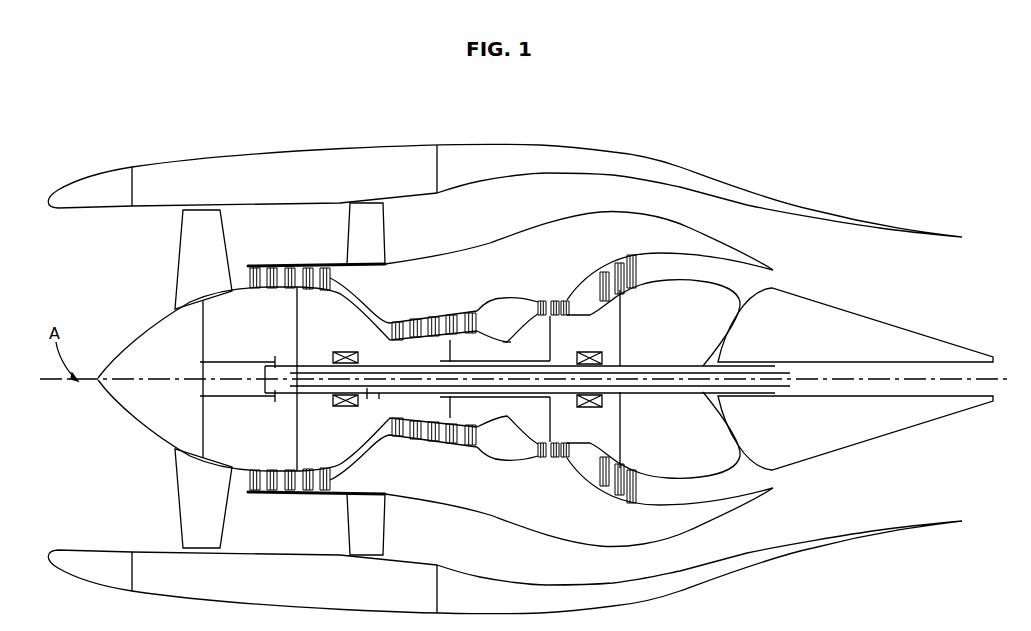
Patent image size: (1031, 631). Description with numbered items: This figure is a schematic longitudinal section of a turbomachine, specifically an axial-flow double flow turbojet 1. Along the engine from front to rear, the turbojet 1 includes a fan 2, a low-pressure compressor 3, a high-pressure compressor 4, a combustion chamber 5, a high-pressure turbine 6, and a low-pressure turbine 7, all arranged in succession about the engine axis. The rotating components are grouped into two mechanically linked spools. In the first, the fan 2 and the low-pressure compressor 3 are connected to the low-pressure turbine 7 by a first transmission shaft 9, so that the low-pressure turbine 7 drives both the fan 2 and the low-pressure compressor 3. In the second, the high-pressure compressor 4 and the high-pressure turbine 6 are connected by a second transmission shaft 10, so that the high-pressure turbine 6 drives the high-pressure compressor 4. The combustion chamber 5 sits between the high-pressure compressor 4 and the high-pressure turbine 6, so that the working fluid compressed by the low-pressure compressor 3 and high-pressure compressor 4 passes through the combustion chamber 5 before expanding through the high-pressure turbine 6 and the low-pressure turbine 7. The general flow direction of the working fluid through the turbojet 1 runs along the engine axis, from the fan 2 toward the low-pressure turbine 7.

The turbojet 1 is at (777, 85).
The fan 2 is at (166, 257).
The low-pressure compressor 3 is at (303, 258).
The high-pressure compressor 4 is at (437, 305).
The combustion chamber 5 is at (501, 287).
The high-pressure turbine 6 is at (546, 282).
The low-pressure turbine 7 is at (617, 248).
The first transmission shaft 9 is at (663, 381).
The second transmission shaft 10 is at (508, 360).